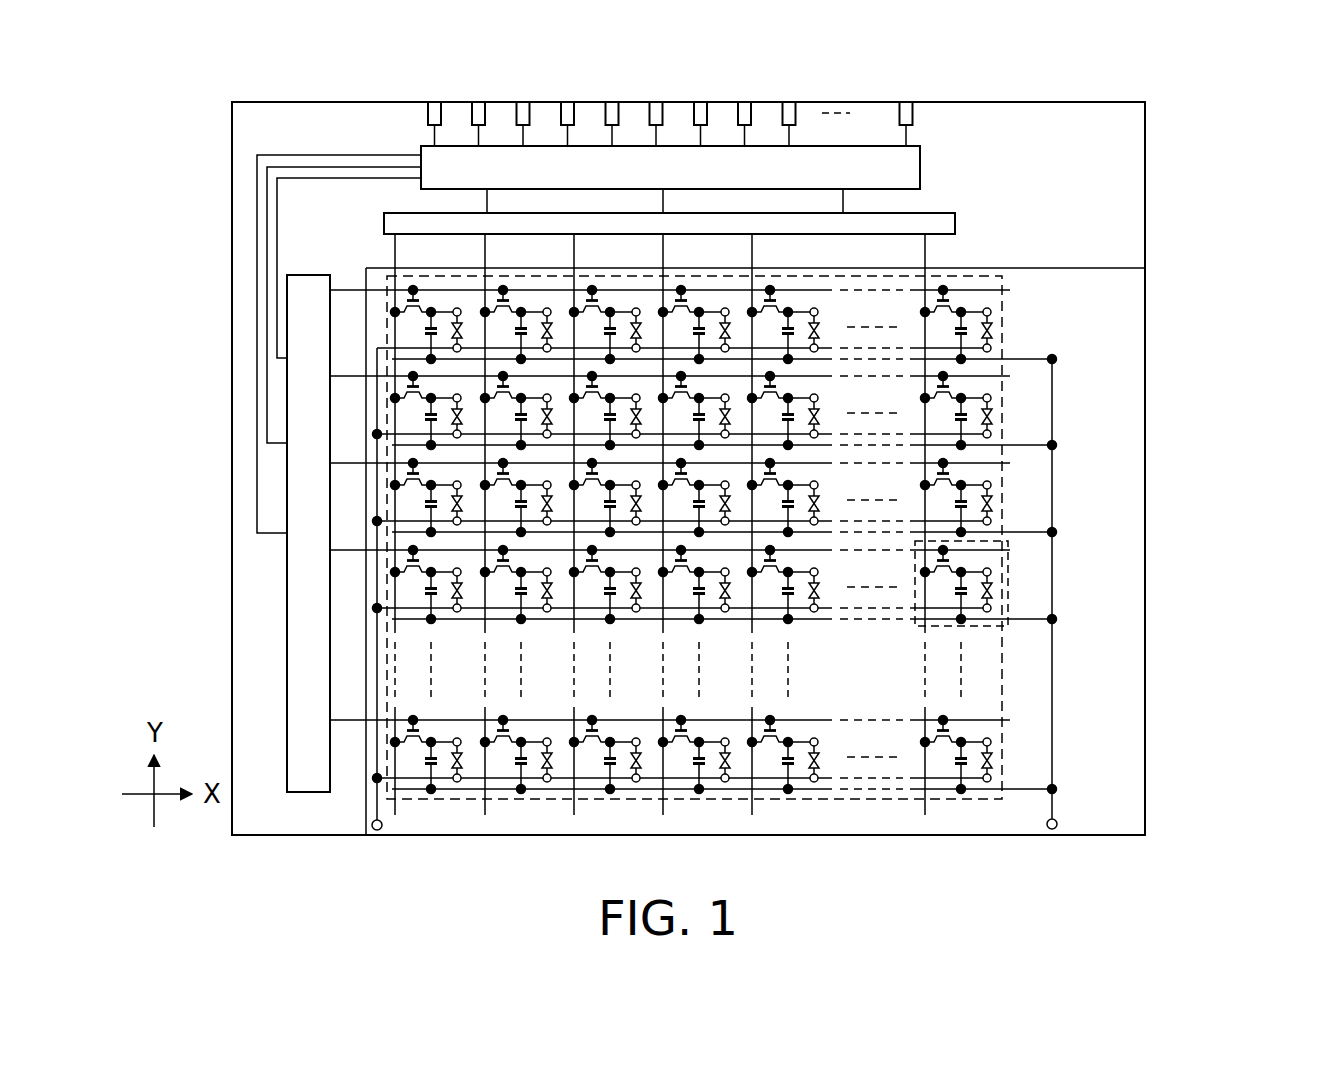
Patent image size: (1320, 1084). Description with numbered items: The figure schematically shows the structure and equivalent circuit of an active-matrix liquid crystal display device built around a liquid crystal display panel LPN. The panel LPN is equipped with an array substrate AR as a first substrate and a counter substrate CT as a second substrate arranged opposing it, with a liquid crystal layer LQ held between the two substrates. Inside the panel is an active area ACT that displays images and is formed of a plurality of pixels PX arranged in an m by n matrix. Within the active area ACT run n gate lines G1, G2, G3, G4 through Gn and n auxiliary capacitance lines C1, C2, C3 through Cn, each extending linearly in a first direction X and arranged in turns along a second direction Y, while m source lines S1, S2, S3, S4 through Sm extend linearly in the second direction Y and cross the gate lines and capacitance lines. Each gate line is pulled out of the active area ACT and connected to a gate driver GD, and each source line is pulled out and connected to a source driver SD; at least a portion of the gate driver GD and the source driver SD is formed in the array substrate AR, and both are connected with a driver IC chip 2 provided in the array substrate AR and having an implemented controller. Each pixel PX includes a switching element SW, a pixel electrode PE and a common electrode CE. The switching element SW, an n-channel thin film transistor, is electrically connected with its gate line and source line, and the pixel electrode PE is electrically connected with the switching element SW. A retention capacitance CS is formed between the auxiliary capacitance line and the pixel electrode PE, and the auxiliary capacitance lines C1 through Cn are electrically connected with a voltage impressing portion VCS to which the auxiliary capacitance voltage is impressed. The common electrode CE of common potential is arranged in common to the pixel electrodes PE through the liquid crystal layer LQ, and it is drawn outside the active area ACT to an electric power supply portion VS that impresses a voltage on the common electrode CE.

The liquid crystal display panel LPN is at (1180, 117).
The driver IC chip 2 is at (920, 167).
The source driver SD is at (955, 223).
The gate driver GD is at (287, 649).
The counter substrate CT is at (1110, 268).
The array substrate AR is at (302, 822).
The active area ACT is at (1002, 392).
The gate line G1 is at (343, 289).
The gate line G2 is at (343, 375).
The gate line G3 is at (343, 462).
The gate line G4 is at (343, 549).
The gate line Gn is at (343, 719).
The source line S1 is at (398, 253).
The source line S2 is at (488, 253).
The source line S3 is at (577, 253).
The source line S4 is at (666, 253).
The source line Sm is at (928, 253).
The auxiliary capacitance line C1 is at (1025, 357).
The auxiliary capacitance line C2 is at (1025, 443).
The auxiliary capacitance line C3 is at (1025, 530).
The auxiliary capacitance line Cn is at (1023, 787).
The pixel PX is at (975, 590).
The switching element SW is at (927, 558).
The retention capacitance CS is at (937, 593).
The pixel electrode PE is at (989, 567).
The liquid crystal layer LQ is at (993, 586).
The common electrode CE is at (991, 607).
The electric power supply portion VS is at (377, 830).
The voltage impressing portion VCS is at (1052, 829).